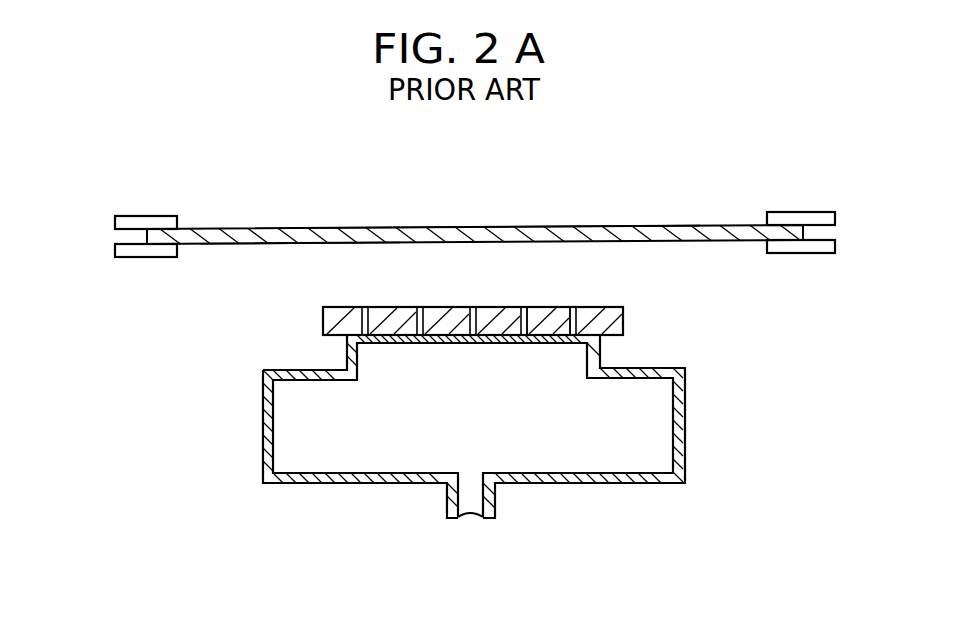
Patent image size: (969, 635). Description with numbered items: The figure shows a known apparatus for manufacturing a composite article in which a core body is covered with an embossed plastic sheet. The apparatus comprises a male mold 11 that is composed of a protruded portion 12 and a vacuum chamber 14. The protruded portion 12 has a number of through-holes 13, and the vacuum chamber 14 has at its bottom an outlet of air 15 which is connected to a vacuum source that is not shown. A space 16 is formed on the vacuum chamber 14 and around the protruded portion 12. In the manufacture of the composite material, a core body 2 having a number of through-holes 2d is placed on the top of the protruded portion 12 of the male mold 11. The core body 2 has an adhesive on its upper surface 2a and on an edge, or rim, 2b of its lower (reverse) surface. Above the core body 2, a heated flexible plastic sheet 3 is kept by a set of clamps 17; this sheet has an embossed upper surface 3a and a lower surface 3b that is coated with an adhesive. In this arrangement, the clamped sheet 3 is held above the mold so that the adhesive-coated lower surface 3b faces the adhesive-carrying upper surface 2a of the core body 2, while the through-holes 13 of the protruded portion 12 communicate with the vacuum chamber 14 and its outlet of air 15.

The core body 2 is at (347, 318).
The upper surface 2a is at (548, 307).
The edge of lower surface 2b is at (338, 339).
The through-holes 2d is at (522, 307).
The heated flexible plastic sheet 3 is at (630, 235).
The embossed upper surface 3a is at (518, 227).
The lower surface 3b is at (285, 243).
The male mold 11 is at (685, 452).
The protruded portion 12 is at (604, 352).
The through-holes 13 is at (557, 343).
The vacuum chamber 14 is at (642, 462).
The outlet of air 15 is at (475, 500).
The space 16 is at (338, 353).
The clamps 17 is at (115, 250).